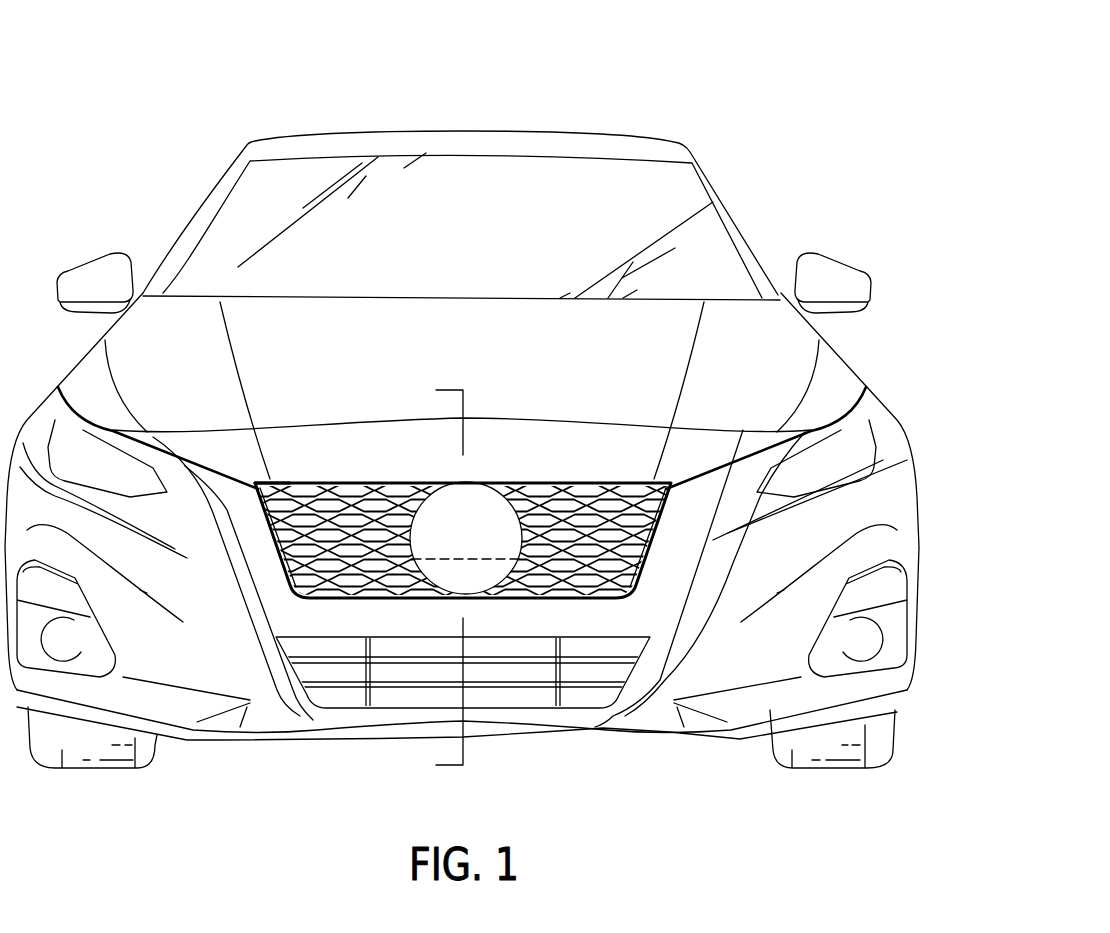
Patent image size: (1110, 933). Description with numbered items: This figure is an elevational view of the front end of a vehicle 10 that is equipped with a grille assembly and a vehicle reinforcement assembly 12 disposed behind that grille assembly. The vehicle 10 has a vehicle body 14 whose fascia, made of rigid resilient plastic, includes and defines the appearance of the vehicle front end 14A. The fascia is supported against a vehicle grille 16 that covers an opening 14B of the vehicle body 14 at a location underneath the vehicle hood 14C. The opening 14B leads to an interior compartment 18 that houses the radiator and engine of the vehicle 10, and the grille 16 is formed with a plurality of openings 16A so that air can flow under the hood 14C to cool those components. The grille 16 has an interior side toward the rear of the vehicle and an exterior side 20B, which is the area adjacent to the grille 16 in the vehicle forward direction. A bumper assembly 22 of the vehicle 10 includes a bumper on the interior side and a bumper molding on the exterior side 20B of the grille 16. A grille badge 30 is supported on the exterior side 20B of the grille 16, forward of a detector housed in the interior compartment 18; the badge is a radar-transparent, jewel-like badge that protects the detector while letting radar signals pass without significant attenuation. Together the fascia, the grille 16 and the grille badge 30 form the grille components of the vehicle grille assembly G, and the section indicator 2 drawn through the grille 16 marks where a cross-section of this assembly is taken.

The vehicle 10 is at (645, 56).
The vehicle reinforcement assembly 12 is at (476, 562).
The vehicle body 14 is at (395, 124).
The vehicle front end 14A is at (236, 563).
The opening 14B is at (720, 473).
The vehicle hood 14C is at (737, 300).
The vehicle grille 16 is at (540, 474).
The openings 16A is at (613, 543).
The interior compartment 18 is at (540, 535).
The exterior side 20B is at (672, 556).
The bumper assembly 22 is at (329, 634).
The grille badge 30 is at (482, 474).
The vehicle grille assembly G is at (316, 457).
The section line 2- 2 is at (430, 576).